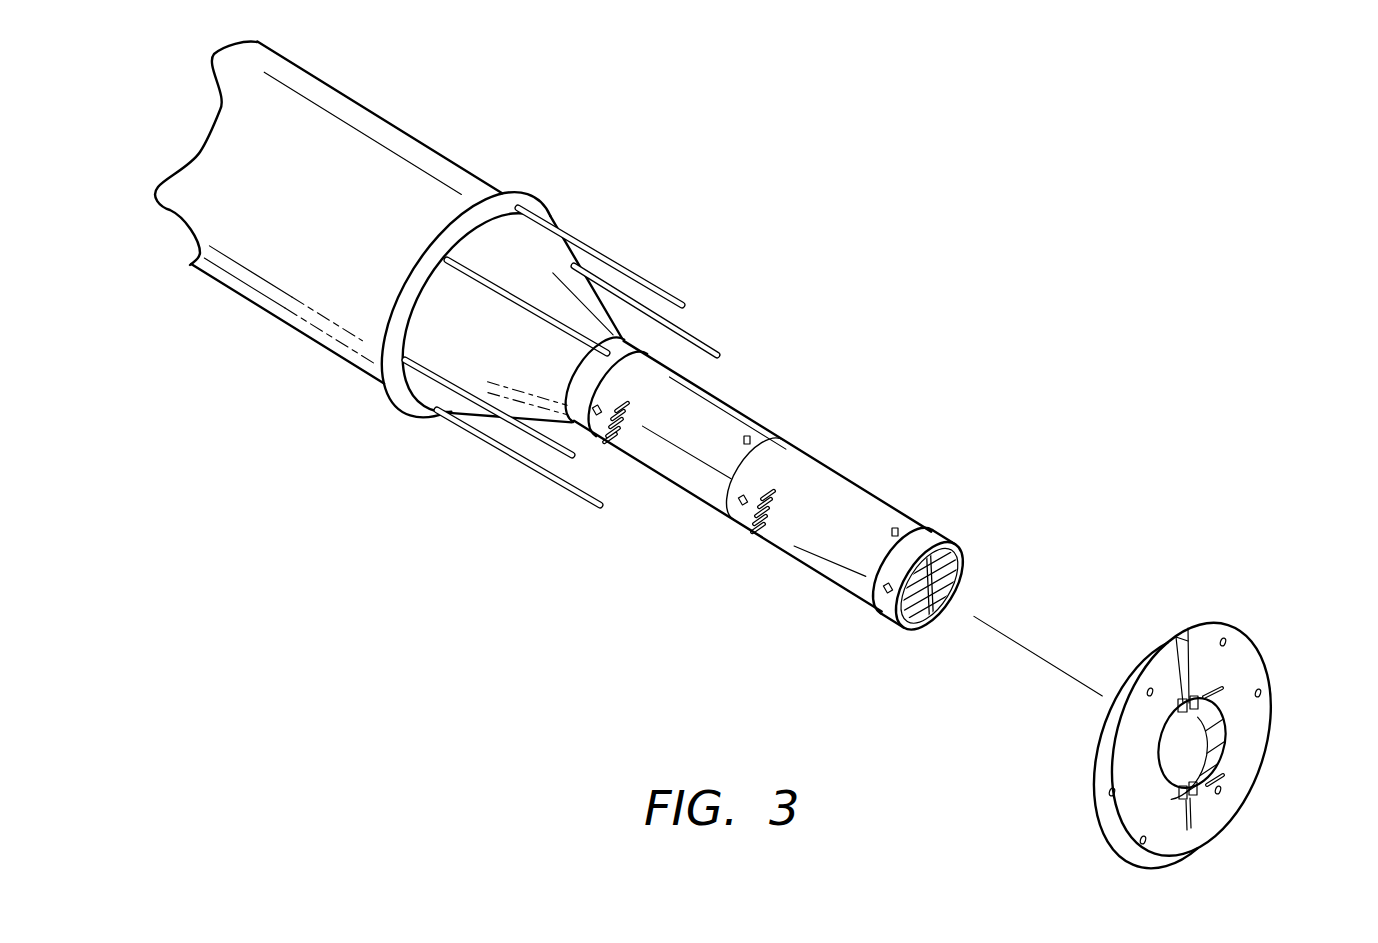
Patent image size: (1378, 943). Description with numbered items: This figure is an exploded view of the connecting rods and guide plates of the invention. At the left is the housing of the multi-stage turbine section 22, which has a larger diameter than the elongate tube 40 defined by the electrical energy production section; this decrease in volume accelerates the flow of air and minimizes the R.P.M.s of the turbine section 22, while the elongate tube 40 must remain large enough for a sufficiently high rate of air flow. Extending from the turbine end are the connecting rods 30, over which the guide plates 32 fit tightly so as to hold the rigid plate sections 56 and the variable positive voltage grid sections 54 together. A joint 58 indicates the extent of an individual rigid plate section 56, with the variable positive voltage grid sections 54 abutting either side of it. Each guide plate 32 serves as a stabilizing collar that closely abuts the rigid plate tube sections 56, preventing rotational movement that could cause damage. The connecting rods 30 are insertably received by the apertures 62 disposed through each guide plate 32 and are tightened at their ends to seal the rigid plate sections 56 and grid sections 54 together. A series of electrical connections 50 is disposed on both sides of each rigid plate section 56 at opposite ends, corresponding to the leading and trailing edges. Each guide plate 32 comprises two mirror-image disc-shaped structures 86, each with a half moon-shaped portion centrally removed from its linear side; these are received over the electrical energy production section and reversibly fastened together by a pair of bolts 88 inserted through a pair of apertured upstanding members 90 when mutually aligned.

The turbine section 22 is at (376, 86).
The connecting rods 30 is at (641, 270).
The guide plates 32 is at (1270, 607).
The elongate tube 40 is at (993, 584).
The series of electrical connections 50 is at (760, 513).
The variable positive voltage grid sections 54 is at (937, 540).
The rigid plate sections 56 is at (832, 490).
The joint 58 is at (885, 612).
The apertures 62 is at (1266, 675).
The disc-shaped structures 86 is at (1142, 750).
The bolts 88 is at (1232, 773).
The apertured upstanding members 90 is at (1197, 793).